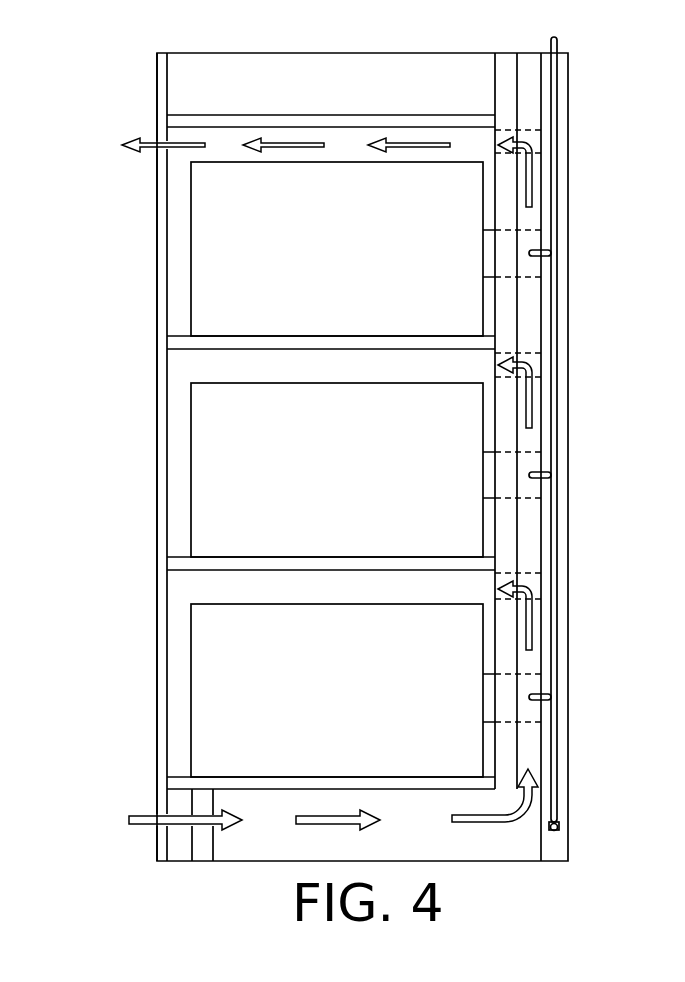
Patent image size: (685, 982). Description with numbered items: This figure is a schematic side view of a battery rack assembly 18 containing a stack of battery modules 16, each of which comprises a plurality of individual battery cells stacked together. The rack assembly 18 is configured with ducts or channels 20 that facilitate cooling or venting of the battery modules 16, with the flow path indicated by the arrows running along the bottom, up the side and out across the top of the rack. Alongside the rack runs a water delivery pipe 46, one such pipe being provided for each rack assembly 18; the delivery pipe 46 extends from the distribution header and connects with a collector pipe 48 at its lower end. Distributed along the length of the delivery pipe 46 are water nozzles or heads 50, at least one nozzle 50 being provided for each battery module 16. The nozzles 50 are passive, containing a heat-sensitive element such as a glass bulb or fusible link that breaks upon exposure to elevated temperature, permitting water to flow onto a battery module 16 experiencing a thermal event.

The battery module 16 is at (232, 440).
The battery rack assembly 18 is at (157, 237).
The ducts or channels 20 is at (462, 144).
The water delivery pipe 46 is at (555, 117).
The collector pipe 48 is at (559, 827).
The water nozzles or heads 50 is at (535, 262).